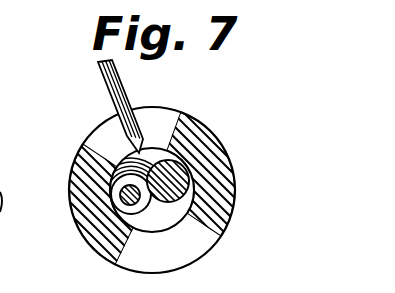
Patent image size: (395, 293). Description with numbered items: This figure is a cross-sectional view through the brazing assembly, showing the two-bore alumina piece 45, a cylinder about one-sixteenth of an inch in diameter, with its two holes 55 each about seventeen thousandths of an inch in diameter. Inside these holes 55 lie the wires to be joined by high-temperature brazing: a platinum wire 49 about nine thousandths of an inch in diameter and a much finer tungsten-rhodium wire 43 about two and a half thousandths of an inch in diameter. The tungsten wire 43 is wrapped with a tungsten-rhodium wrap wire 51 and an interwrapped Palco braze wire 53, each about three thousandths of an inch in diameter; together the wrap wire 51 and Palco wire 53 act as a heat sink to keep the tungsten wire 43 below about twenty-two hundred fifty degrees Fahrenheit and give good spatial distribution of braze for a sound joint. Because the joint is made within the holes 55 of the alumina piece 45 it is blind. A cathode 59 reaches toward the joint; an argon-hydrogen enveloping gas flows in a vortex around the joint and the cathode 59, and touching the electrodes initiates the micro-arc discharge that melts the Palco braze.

The W3Rh tungsten wire 43 is at (113, 211).
The two-bore alumina piece 45 is at (235, 174).
The platinum wire 49 is at (177, 163).
The W3Rh tungsten wrap wire 51 is at (111, 173).
The Palco wire 53 is at (114, 192).
The holes 55 is at (172, 97).
The cathode 59 is at (107, 81).